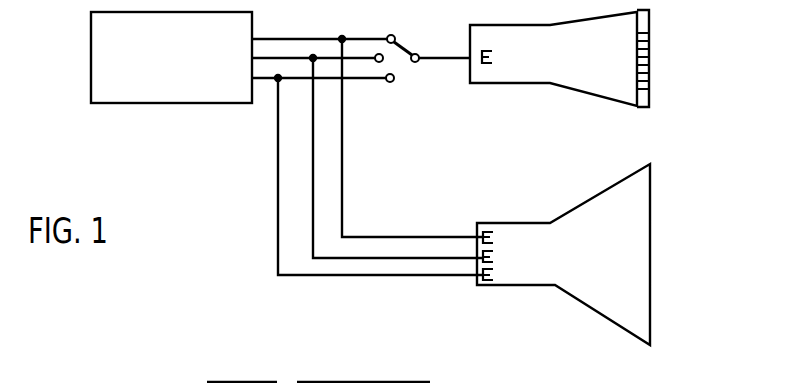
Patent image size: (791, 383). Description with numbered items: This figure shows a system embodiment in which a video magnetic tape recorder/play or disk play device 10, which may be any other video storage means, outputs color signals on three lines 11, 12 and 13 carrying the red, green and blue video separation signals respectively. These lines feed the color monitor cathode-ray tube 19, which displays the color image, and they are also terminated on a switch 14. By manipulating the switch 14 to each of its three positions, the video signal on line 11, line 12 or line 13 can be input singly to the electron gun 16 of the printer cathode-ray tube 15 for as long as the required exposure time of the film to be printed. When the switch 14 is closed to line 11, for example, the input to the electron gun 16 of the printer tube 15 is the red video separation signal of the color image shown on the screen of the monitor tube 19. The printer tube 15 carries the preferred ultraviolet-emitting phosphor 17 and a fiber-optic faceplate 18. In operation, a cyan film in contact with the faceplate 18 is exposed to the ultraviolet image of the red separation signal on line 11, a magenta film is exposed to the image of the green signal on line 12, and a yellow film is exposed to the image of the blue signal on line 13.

The video magnetic tape recorder/play or disk play device 10 is at (171, 86).
The line 11 is at (342, 166).
The line 12 is at (313, 199).
The line 13 is at (278, 246).
The switch 14 is at (403, 54).
The cathode-ray tube 15 is at (536, 86).
The electron gun 16 is at (489, 63).
The ultraviolet-emitting phosphor 17 is at (636, 72).
The fiber-optic faceplate 18 is at (646, 50).
The color monitor cathode-ray tube 19 is at (528, 222).